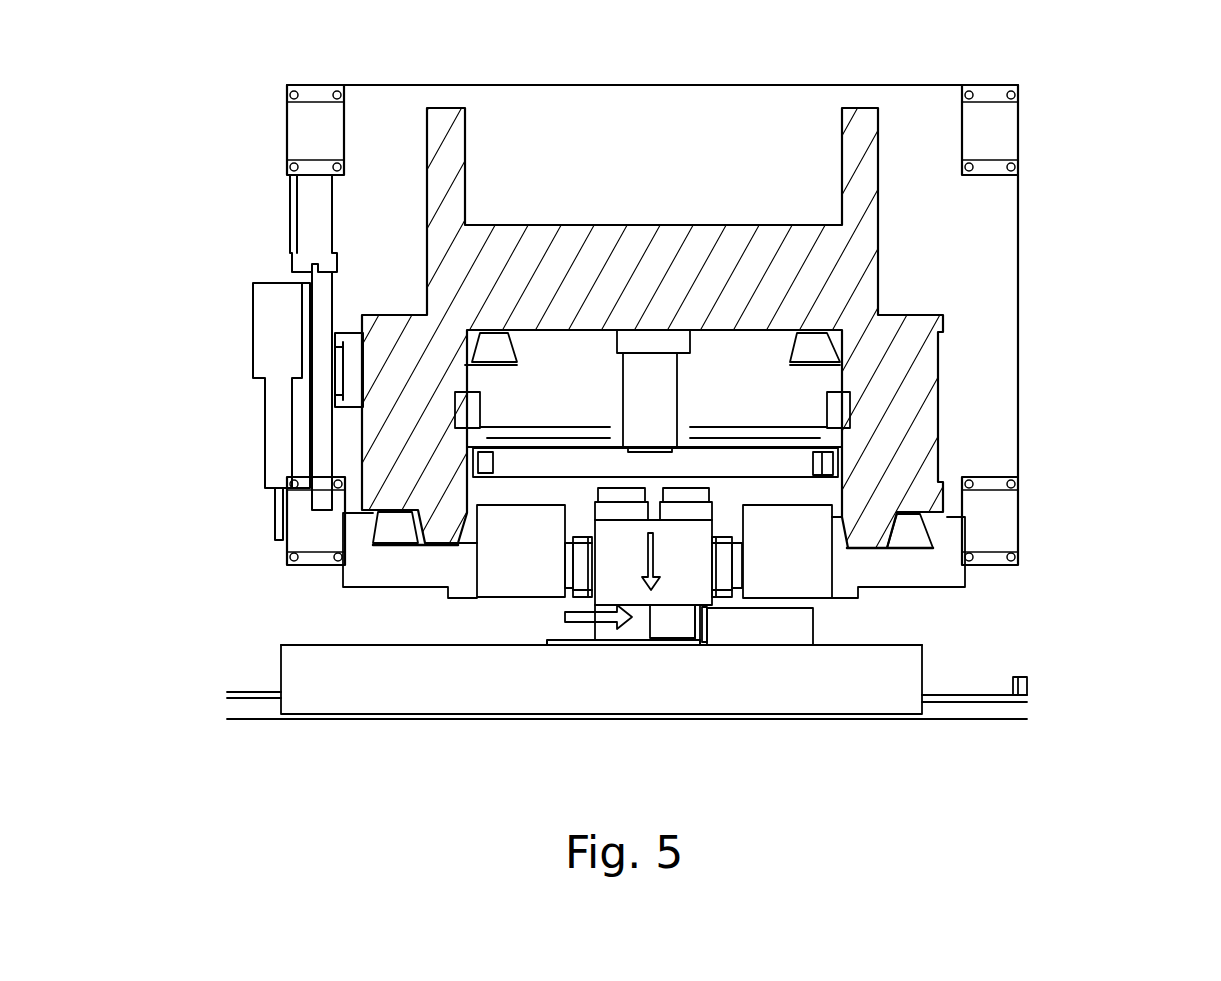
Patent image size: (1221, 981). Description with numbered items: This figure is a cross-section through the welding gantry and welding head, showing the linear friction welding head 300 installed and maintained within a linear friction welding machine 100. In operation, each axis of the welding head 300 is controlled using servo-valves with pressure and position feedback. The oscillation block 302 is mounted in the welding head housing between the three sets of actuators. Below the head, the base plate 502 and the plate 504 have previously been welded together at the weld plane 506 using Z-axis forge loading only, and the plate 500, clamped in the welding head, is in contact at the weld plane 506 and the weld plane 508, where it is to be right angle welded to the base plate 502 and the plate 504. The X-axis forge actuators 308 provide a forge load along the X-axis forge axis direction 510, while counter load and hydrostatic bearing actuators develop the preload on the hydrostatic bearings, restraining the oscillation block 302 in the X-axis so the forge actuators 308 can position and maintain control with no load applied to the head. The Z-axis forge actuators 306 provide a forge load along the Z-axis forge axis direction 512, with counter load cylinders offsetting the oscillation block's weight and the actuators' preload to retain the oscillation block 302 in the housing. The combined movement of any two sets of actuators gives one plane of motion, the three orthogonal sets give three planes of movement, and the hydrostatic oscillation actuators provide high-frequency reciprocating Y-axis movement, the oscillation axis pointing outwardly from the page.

The linear friction welding machine 100 is at (1110, 72).
The linear friction welding head 300 is at (728, 533).
The oscillation block 302 is at (685, 580).
The Z-axis forge actuators 306 is at (623, 493).
The X-axis forge actuators 308 is at (563, 557).
The plate 500 is at (683, 645).
The base plate 502 is at (573, 645).
The plate 504 is at (793, 628).
The weld plane 506 is at (630, 645).
The weld plane 508 is at (707, 630).
The X-axis forge axis direction 510 is at (563, 612).
The Z-axis forge axis direction 512 is at (647, 558).